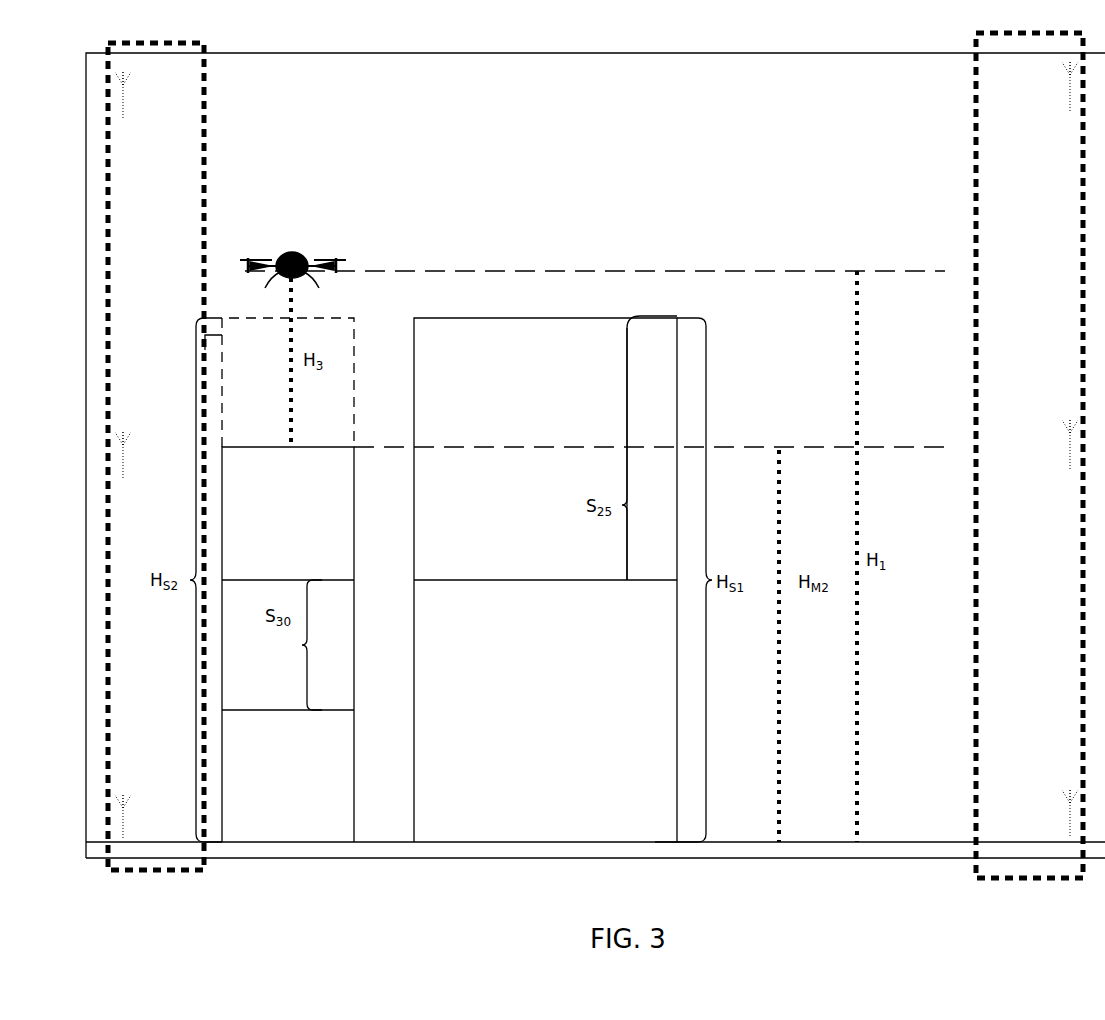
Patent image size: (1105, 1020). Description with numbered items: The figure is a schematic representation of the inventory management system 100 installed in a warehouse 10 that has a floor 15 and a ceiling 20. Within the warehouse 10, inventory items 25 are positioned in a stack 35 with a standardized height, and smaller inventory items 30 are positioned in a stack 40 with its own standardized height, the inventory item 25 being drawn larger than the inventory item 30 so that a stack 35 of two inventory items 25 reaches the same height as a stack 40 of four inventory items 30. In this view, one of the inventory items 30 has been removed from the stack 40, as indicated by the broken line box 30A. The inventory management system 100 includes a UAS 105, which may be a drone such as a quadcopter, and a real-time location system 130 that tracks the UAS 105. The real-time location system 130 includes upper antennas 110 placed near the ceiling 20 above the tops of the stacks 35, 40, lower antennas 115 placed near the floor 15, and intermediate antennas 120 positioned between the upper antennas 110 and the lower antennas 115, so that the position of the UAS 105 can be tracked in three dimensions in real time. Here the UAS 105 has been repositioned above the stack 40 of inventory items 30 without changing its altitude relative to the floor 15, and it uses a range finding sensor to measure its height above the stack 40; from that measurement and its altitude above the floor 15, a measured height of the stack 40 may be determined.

The warehouse 10 is at (87, 440).
The floor 15 is at (713, 842).
The ceiling 20 is at (618, 53).
The inventory items 25 is at (545, 580).
The inventory items 30 is at (288, 580).
The broken line box 30A is at (205, 355).
The stack 35 is at (658, 316).
The stack 40 is at (300, 437).
The inventory management system 100 is at (264, 68).
The UAS 105 is at (345, 271).
The upper antennas 110 is at (123, 103).
The lower antennas 115 is at (123, 818).
The intermediate antennas 120 is at (123, 458).
The real-time location system 130 is at (975, 878).